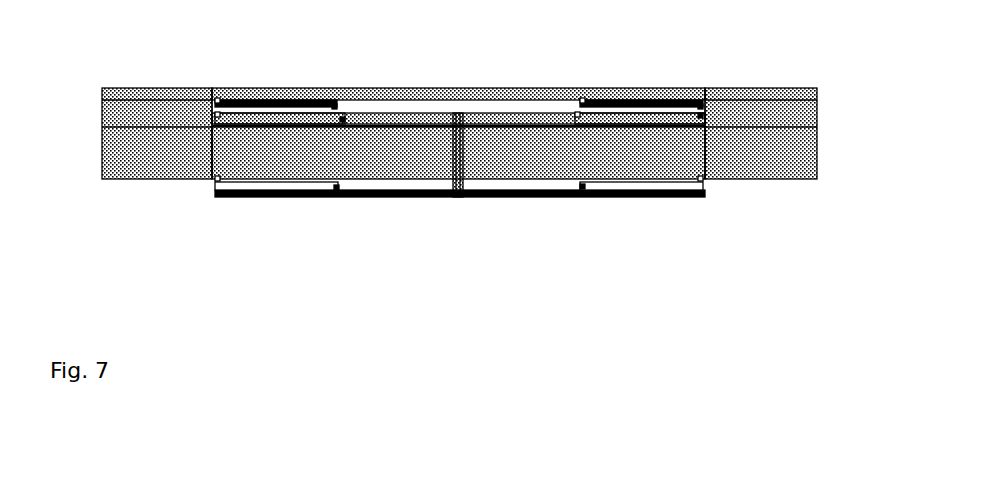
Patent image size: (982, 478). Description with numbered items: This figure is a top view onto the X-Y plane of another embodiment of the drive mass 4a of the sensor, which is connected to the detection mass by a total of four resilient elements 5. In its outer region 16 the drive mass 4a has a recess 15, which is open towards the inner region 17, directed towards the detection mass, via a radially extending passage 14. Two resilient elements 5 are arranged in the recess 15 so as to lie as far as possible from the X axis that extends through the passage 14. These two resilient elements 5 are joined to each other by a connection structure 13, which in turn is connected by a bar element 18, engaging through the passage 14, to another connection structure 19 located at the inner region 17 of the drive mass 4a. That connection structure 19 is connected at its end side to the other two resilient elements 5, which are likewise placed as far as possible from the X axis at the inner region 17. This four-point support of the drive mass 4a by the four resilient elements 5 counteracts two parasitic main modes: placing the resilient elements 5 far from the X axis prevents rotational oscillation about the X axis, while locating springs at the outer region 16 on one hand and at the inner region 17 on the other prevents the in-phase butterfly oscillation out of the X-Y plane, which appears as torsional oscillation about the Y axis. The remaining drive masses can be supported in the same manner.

The drive mass 4a is at (784, 89).
The resilient element 5 is at (278, 100).
The connection structure 13 is at (543, 115).
The passage 14 is at (468, 197).
The recess 15 is at (414, 103).
The outer region 16 is at (322, 100).
The inner region 17 is at (180, 180).
The bar element 18 is at (452, 194).
The connection structure 19 is at (533, 197).